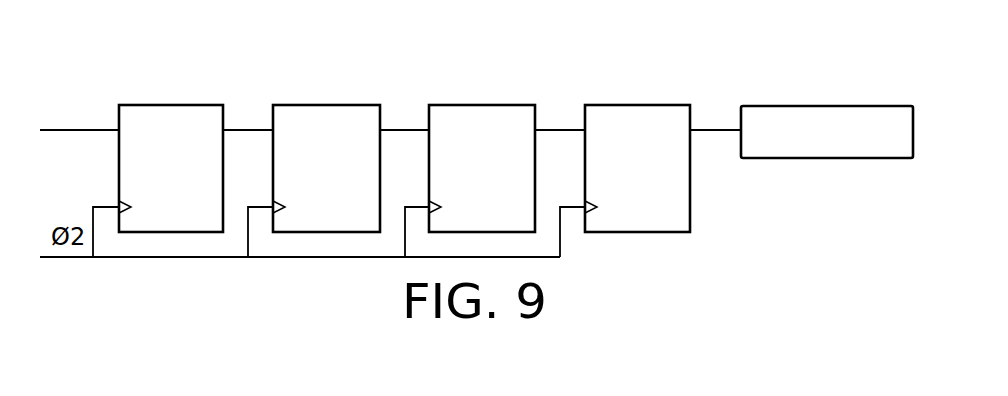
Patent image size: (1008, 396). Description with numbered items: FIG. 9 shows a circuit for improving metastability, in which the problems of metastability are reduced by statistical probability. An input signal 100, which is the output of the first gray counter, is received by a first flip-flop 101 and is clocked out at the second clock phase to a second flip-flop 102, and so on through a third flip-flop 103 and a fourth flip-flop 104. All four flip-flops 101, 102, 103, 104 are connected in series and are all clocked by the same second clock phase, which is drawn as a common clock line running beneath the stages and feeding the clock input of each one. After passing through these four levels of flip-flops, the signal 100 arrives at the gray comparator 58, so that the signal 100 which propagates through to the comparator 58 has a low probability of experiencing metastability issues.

The input signal 100 is at (75, 134).
The first flip-flop 101 is at (188, 105).
The second flip-flop 102 is at (342, 105).
The third flip-flop 103 is at (499, 105).
The fourth flip-flop 104 is at (653, 105).
The comparator 58 is at (880, 106).